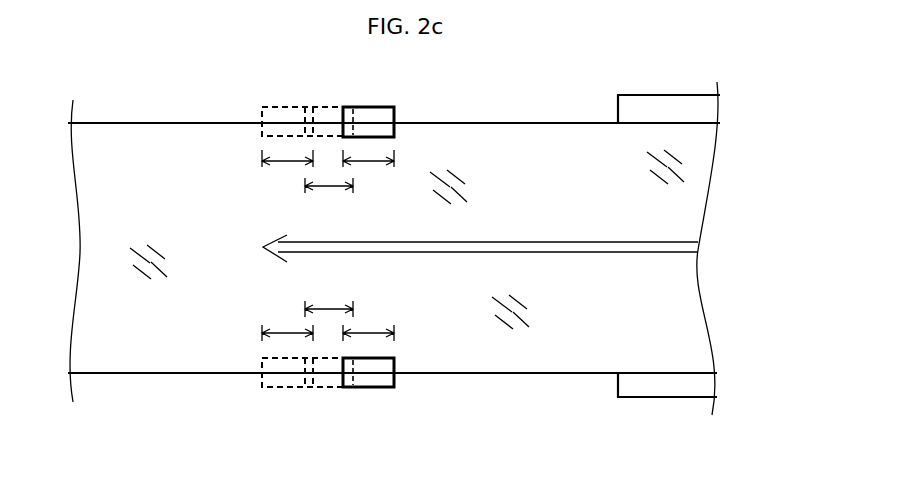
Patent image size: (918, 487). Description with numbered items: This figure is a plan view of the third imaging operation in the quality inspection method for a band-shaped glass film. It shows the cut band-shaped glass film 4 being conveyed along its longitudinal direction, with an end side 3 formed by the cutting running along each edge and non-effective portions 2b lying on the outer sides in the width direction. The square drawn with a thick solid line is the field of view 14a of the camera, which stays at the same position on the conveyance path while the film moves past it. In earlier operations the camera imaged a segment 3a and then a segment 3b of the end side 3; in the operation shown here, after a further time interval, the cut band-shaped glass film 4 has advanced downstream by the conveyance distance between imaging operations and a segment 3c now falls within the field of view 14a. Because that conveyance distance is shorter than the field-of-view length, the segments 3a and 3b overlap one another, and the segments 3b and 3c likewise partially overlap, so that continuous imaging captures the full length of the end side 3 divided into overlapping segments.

The end side 3 is at (492, 122).
The segment 3a is at (288, 163).
The segment 3b is at (328, 188).
The segment 3c is at (367, 163).
The field of view 14a is at (370, 107).
The non-effective portion 2b is at (703, 108).
The cut band-shaped glass film 4 is at (668, 283).